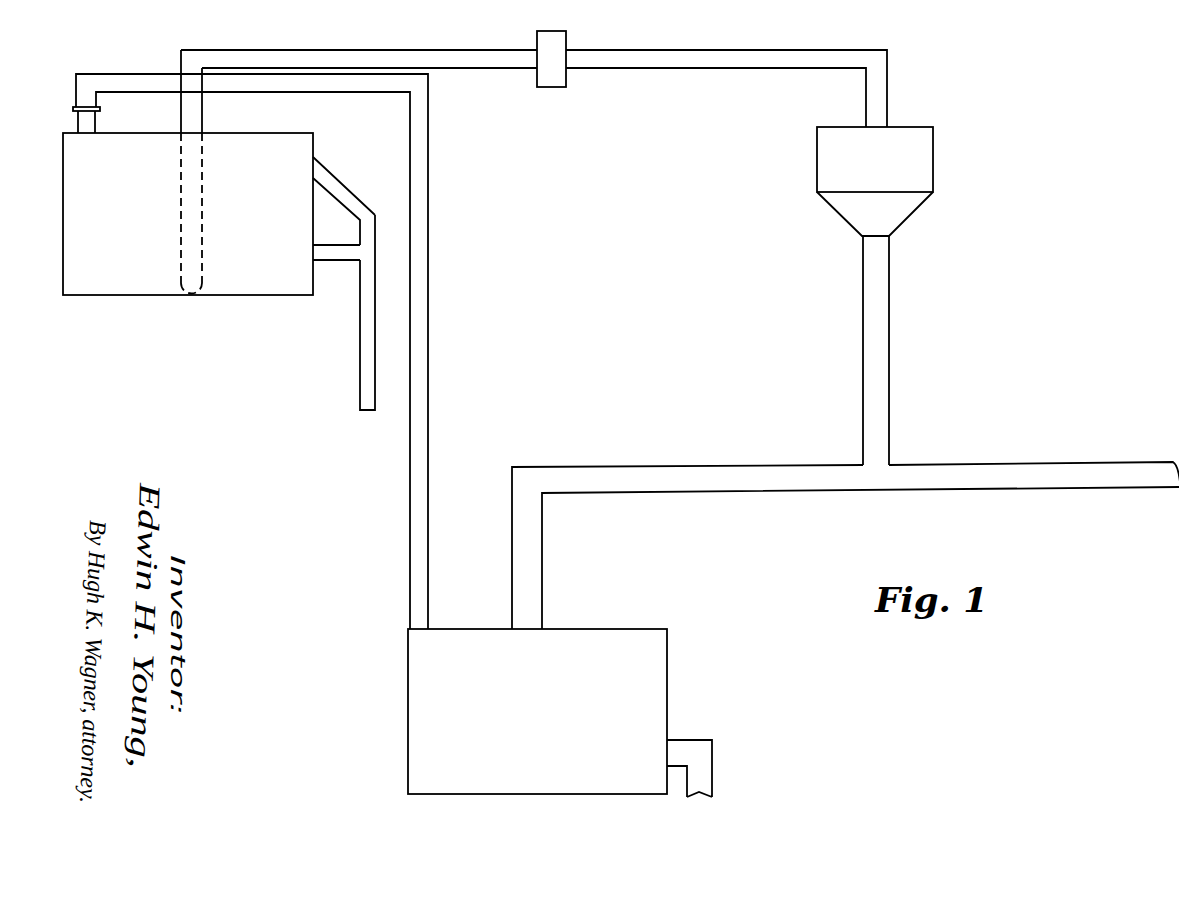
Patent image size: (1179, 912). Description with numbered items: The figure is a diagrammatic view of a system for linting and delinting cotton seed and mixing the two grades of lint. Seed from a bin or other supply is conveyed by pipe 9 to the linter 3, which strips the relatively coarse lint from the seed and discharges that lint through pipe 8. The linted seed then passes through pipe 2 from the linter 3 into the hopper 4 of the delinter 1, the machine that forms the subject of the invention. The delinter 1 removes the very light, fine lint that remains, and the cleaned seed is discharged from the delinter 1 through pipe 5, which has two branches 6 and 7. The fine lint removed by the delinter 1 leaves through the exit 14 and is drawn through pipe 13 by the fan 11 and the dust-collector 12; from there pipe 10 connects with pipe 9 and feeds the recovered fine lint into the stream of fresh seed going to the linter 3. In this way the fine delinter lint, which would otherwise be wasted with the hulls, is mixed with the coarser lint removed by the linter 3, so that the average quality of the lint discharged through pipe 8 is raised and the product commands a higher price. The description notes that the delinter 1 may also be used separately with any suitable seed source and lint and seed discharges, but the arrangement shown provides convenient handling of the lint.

The delinter 1 is at (113, 299).
The pipe 2 is at (137, 47).
The linter 3 is at (537, 711).
The hopper 4 is at (92, 120).
The pipe 5 is at (367, 350).
The branch 6 is at (338, 255).
The branch 7 is at (338, 190).
The pipe 8 is at (700, 780).
The pipe 9 is at (653, 484).
The pipe 10 is at (863, 348).
The fan 11 is at (548, 80).
The dust-collector 12 is at (830, 160).
The pipe 13 is at (463, 60).
The exit 14 is at (183, 299).